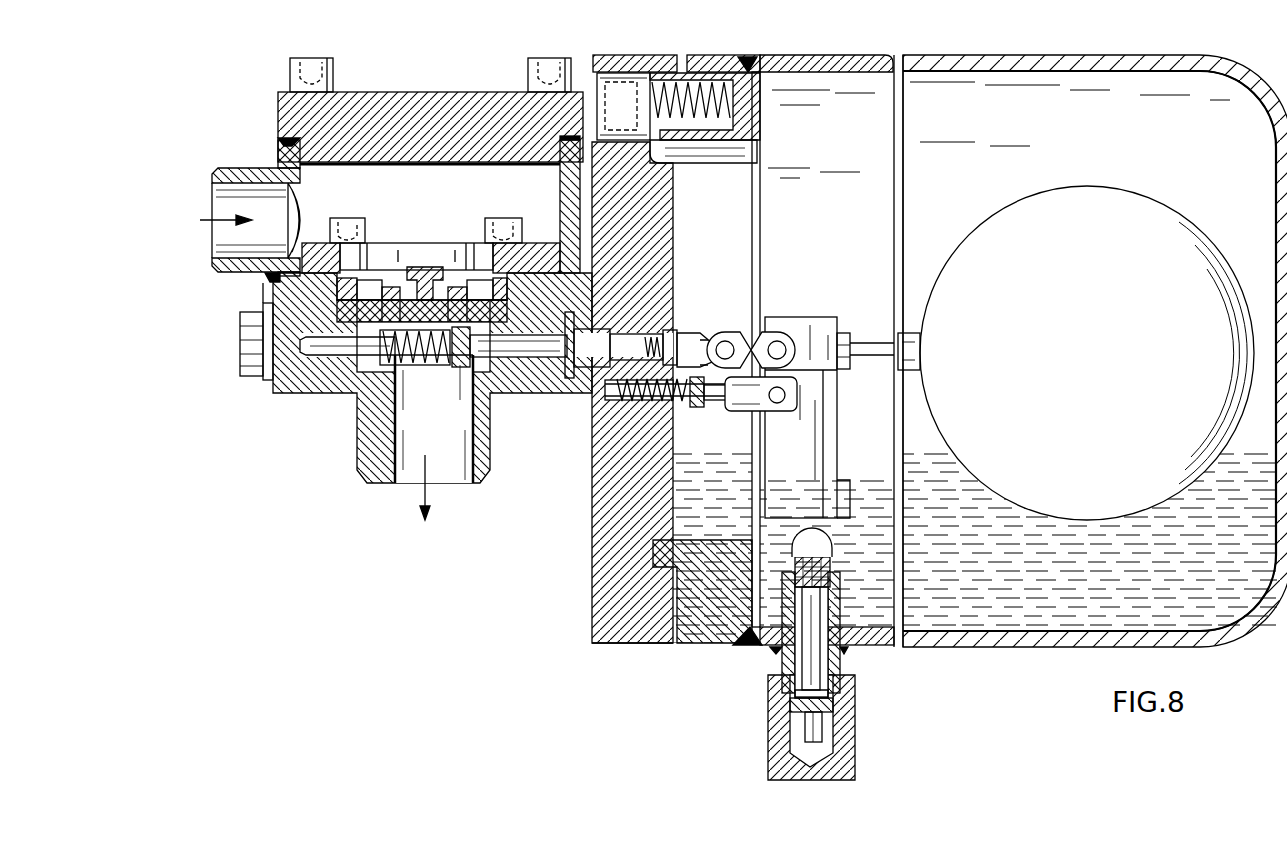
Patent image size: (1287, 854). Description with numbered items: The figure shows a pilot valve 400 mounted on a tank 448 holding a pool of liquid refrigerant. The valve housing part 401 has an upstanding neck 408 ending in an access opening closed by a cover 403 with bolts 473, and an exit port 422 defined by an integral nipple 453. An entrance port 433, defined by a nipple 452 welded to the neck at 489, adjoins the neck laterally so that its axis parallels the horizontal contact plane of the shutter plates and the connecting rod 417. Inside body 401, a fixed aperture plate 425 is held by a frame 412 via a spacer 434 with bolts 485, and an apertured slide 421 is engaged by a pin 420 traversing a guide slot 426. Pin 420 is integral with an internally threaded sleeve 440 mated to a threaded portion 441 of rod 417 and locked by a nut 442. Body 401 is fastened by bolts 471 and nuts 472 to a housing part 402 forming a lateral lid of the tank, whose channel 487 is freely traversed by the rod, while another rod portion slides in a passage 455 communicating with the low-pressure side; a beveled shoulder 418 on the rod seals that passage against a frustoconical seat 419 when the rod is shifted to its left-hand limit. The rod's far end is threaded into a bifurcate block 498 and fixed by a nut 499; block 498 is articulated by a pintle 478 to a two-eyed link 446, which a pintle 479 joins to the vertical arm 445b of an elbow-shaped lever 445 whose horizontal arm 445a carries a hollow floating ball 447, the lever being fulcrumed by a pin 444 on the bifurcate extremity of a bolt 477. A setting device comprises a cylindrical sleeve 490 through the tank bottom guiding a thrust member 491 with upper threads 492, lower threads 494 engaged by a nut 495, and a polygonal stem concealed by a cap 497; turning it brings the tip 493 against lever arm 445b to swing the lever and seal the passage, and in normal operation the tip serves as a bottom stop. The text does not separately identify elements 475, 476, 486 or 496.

The pilot valve 400 is at (395, 545).
The housing part 401 is at (300, 393).
The housing part 402 is at (582, 590).
The cover 403 is at (392, 104).
The upstanding neck 408 is at (562, 179).
The frame 412 is at (536, 242).
The connecting rod 417 is at (530, 365).
The beveled shoulder 418 is at (677, 300).
The frustoconical seat 419 is at (567, 362).
The pin 420 is at (433, 300).
The apertured slide 421 is at (466, 300).
The exit port 422 is at (433, 420).
The fixed aperture plate 425 is at (383, 298).
The guide slot 426 is at (414, 300).
The entrance port 433 is at (262, 205).
The spacer 434 is at (369, 300).
The internally threaded sleeve 440 is at (404, 368).
The threaded portion 441 is at (358, 395).
The nut 442 is at (462, 370).
The pin 444 is at (777, 400).
The elbow-shaped lever 445 is at (840, 380).
The horizontal arm 445a is at (863, 335).
The vertical arm 445b is at (828, 490).
The link 446 is at (768, 336).
The hollow ball 447 is at (1056, 198).
The tank 448 is at (1090, 368).
The nipple 452 is at (240, 290).
The nipple 453 is at (486, 468).
The passage 455 is at (600, 268).
The bolts 471 is at (248, 352).
The nuts 472 is at (254, 380).
The bolts 473 is at (333, 75).
The liquid chamber 475 is at (680, 512).
The lower block 476 is at (688, 628).
The bolt 477 is at (713, 408).
The pintle 478 is at (733, 330).
The pintle 479 is at (802, 336).
The bolts 485 is at (338, 222).
The adjusting bolt 486 is at (597, 78).
The channel 487 is at (590, 432).
The weld 489 is at (268, 284).
The cylindrical sleeve 490 is at (847, 656).
The thrust member 491 is at (780, 640).
The upper threads 492 is at (820, 568).
The tip 493 is at (845, 560).
The lower threads 494 is at (800, 712).
The nut 495 is at (845, 710).
The stem end 496 is at (835, 744).
The cap 497 is at (768, 747).
The bifurcate block 498 is at (727, 335).
The nut 499 is at (690, 330).